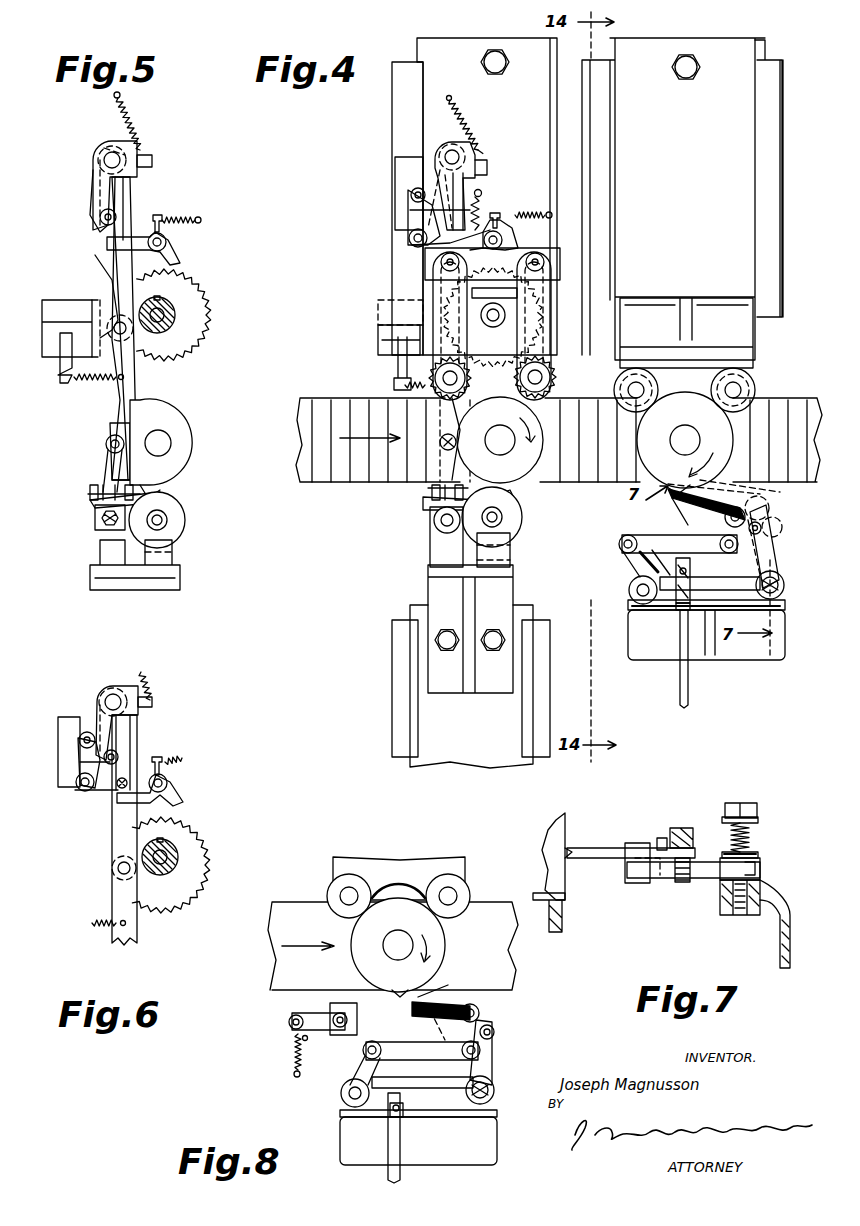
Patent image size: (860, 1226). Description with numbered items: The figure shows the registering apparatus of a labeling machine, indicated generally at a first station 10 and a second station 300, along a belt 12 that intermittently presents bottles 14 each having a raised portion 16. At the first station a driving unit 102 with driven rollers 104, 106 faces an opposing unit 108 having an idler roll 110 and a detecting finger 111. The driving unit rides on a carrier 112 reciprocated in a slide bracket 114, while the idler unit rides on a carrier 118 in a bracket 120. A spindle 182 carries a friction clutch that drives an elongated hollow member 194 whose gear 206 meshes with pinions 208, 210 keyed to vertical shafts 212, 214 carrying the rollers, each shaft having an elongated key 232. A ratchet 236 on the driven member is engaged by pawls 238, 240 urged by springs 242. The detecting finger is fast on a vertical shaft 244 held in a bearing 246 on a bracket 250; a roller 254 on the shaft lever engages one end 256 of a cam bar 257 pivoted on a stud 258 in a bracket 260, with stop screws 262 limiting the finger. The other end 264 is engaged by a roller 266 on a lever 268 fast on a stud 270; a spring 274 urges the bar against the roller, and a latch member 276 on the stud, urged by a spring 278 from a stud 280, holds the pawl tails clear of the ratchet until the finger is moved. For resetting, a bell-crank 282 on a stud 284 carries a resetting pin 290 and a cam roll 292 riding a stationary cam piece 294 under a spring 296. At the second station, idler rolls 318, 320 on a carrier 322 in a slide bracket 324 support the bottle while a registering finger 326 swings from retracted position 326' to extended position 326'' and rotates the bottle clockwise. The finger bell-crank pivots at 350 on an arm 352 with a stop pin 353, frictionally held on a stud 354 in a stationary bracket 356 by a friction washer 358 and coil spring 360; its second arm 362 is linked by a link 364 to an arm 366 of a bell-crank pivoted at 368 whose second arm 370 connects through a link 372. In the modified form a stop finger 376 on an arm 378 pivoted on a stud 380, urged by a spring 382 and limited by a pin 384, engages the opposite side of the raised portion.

In FIG. 4, the registering apparatus 10 is at (346, 290).
In FIG. 4, the belt 12 is at (322, 478).
In FIG. 8, the belt 12 is at (285, 972).
In FIG. 7, the belt 12 is at (562, 898).
In FIG. 4, the bottle 14 is at (595, 440).
In FIG. 5, the bottle 14 is at (192, 432).
In FIG. 8, the bottle 14 is at (440, 936).
In FIG. 7, the bottle 14 is at (552, 840).
In FIG. 4, the raised portion 16 is at (447, 414).
In FIG. 5, the raised portion 16 is at (178, 480).
In FIG. 8, the raised portion 16 is at (399, 1010).
In FIG. 7, the raised portion 16 is at (572, 858).
In FIG. 4, the driving unit 102 is at (522, 190).
In FIG. 4, the driven roller 104 is at (548, 375).
In FIG. 4, the driven roller 106 is at (438, 398).
In FIG. 4, the opposing unit 108 is at (410, 569).
In FIG. 4, the idler roll 110 is at (515, 530).
In FIG. 5, the idler roll 110 is at (183, 532).
In FIG. 4, the detecting finger 111 is at (512, 506).
In FIG. 5, the detecting finger 111 is at (166, 505).
In FIG. 4, the carrier 112 is at (468, 62).
In FIG. 4, the slide bracket 114 is at (395, 107).
In FIG. 4, the carrier 118 is at (471, 686).
In FIG. 4, the bracket 120 is at (400, 675).
In FIG. 4, the spindle 182 is at (493, 322).
In FIG. 5, the spindle 182 is at (170, 318).
In FIG. 6, the spindle 182 is at (175, 862).
In FIG. 5, the elongated hollow member 194 is at (170, 310).
In FIG. 6, the elongated hollow member 194 is at (172, 852).
In FIG. 4, the gear 206 is at (548, 290).
In FIG. 4, the pinion 208 is at (556, 382).
In FIG. 4, the pinion 210 is at (442, 411).
In FIG. 4, the vertical shaft 212 is at (560, 370).
In FIG. 4, the vertical shaft 214 is at (440, 376).
In FIG. 4, the elongated key 232 is at (450, 466).
In FIG. 5, the ratchet 236 is at (185, 285).
In FIG. 6, the ratchet 236 is at (200, 815).
In FIG. 4, the pawl 238 is at (510, 236).
In FIG. 5, the pawl 238 is at (167, 243).
In FIG. 6, the pawl 238 is at (170, 782).
In FIG. 4, the pawl 240 is at (554, 223).
In FIG. 5, the pawl 240 is at (226, 231).
In FIG. 6, the pawl 240 is at (216, 762).
In FIG. 4, the spring 242 is at (525, 212).
In FIG. 5, the spring 242 is at (180, 212).
In FIG. 4, the vertical shaft 244 is at (445, 528).
In FIG. 5, the vertical shaft 244 is at (97, 518).
In FIG. 4, the bearing 246 is at (428, 562).
In FIG. 4, the bracket 250 is at (445, 688).
In FIG. 5, the roller 254 is at (106, 443).
In FIG. 5, the end of cam bar 256 is at (118, 425).
In FIG. 5, the cam bar 257 is at (140, 352).
In FIG. 6, the cam bar 257 is at (122, 858).
In FIG. 5, the stud 258 is at (108, 290).
In FIG. 5, the bracket 260 is at (71, 341).
In FIG. 4, the stop screws 262 is at (428, 490).
In FIG. 5, the stop screws 262 is at (88, 490).
In FIG. 5, the end of cam bar 264 is at (130, 205).
In FIG. 5, the roller 266 is at (92, 222).
In FIG. 4, the lever 268 is at (435, 168).
In FIG. 5, the lever 268 is at (92, 172).
In FIG. 4, the stud 270 is at (445, 156).
In FIG. 5, the stud 270 is at (110, 157).
In FIG. 6, the stud 270 is at (111, 693).
In FIG. 5, the spring 274 is at (90, 385).
In FIG. 6, the spring 274 is at (100, 930).
In FIG. 5, the latch member 276 is at (95, 193).
In FIG. 6, the latch member 276 is at (108, 800).
In FIG. 4, the spring 278 is at (470, 118).
In FIG. 5, the spring 278 is at (132, 128).
In FIG. 5, the stud 280 is at (152, 160).
In FIG. 4, the bell-crank 282 is at (405, 213).
In FIG. 6, the bell-crank 282 is at (80, 760).
In FIG. 4, the stud 284 is at (409, 238).
In FIG. 6, the stud 284 is at (86, 793).
In FIG. 4, the resetting pin 290 is at (478, 198).
In FIG. 6, the resetting pin 290 is at (126, 780).
In FIG. 4, the cam roll 292 is at (410, 192).
In FIG. 6, the cam roll 292 is at (90, 730).
In FIG. 4, the cam piece 294 is at (398, 170).
In FIG. 6, the cam piece 294 is at (65, 722).
In FIG. 4, the spring 296 is at (496, 201).
In FIG. 4, the second station 300 is at (773, 371).
In FIG. 8, the second station 300 is at (378, 840).
In FIG. 4, the idler roll 318 is at (640, 370).
In FIG. 8, the idler roll 318 is at (330, 890).
In FIG. 4, the idler roll 320 is at (725, 370).
In FIG. 8, the idler roll 320 is at (460, 888).
In FIG. 4, the carrier 322 is at (673, 199).
In FIG. 4, the slide bracket 324 is at (770, 72).
In FIG. 4, the registering finger 326 is at (723, 487).
In FIG. 8, the registering finger 326 is at (450, 1003).
In FIG. 7, the registering finger 326 is at (631, 824).
In FIG. 4, the retracted position of registering finger 326' is at (717, 520).
In FIG. 4, the extended position of registering finger 326'' is at (740, 494).
In FIG. 4, the pivot 350 is at (678, 543).
In FIG. 8, the pivot 350 is at (480, 1012).
In FIG. 7, the pivot 350 is at (638, 845).
In FIG. 4, the arm 352 is at (770, 555).
In FIG. 8, the arm 352 is at (492, 1060).
In FIG. 7, the arm 352 is at (705, 880).
In FIG. 4, the stop pin 353 is at (770, 525).
In FIG. 8, the stop pin 353 is at (482, 1013).
In FIG. 7, the stop pin 353 is at (662, 836).
In FIG. 4, the stud 354 is at (778, 600).
In FIG. 8, the stud 354 is at (494, 1092).
In FIG. 7, the stud 354 is at (735, 803).
In FIG. 4, the stationary bracket 356 is at (720, 660).
In FIG. 8, the stationary bracket 356 is at (492, 1150).
In FIG. 7, the stationary bracket 356 is at (768, 922).
In FIG. 7, the friction washer 358 is at (760, 855).
In FIG. 7, the coil spring 360 is at (752, 828).
In FIG. 4, the second arm 362 is at (690, 580).
In FIG. 8, the second arm 362 is at (465, 1035).
In FIG. 7, the second arm 362 is at (682, 880).
In FIG. 4, the link 364 is at (648, 548).
In FIG. 8, the link 364 is at (422, 1074).
In FIG. 7, the link 364 is at (683, 828).
In FIG. 4, the arm 366 is at (632, 565).
In FIG. 8, the arm 366 is at (356, 1068).
In FIG. 4, the pivot 368 is at (630, 594).
In FIG. 8, the pivot 368 is at (348, 1096).
In FIG. 4, the second arm 370 is at (676, 598).
In FIG. 8, the second arm 370 is at (372, 1118).
In FIG. 4, the link 372 is at (680, 680).
In FIG. 8, the link 372 is at (402, 1150).
In FIG. 8, the stop finger 376 is at (358, 993).
In FIG. 8, the arm 378 is at (305, 1015).
In FIG. 8, the stud 380 is at (343, 1030).
In FIG. 8, the spring 382 is at (292, 1048).
In FIG. 8, the pin 384 is at (292, 1070).